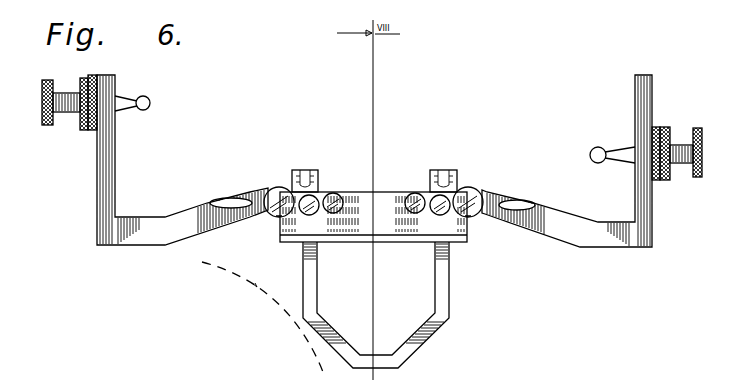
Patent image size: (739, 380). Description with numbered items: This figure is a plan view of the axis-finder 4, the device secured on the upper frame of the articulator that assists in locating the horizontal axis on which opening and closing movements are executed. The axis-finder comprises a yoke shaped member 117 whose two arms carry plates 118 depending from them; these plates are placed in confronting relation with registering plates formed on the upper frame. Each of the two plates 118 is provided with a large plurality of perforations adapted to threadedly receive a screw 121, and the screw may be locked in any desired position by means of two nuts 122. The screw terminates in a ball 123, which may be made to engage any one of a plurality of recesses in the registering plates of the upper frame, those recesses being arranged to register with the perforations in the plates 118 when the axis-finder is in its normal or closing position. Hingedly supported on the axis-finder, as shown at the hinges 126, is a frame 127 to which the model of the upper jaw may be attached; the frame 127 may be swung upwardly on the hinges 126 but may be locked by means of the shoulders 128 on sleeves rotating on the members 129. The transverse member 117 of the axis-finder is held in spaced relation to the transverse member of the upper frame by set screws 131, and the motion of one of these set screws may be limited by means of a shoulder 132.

The axis-finder 4 is at (556, 238).
The yoke shaped member 117 is at (176, 215).
The plates 118 is at (115, 155).
The screw 121 is at (70, 112).
The nuts 122 is at (92, 75).
The ball 123 is at (150, 101).
The hinges 126 is at (318, 182).
The frame 127 is at (313, 262).
The shoulders 128 is at (276, 187).
The members 129 is at (278, 218).
The set screws 131 is at (346, 198).
The shoulder 132 is at (338, 195).